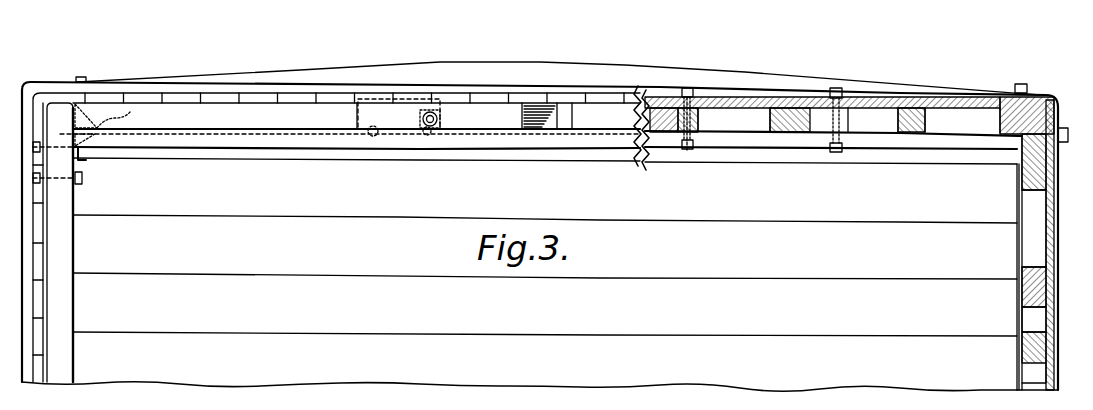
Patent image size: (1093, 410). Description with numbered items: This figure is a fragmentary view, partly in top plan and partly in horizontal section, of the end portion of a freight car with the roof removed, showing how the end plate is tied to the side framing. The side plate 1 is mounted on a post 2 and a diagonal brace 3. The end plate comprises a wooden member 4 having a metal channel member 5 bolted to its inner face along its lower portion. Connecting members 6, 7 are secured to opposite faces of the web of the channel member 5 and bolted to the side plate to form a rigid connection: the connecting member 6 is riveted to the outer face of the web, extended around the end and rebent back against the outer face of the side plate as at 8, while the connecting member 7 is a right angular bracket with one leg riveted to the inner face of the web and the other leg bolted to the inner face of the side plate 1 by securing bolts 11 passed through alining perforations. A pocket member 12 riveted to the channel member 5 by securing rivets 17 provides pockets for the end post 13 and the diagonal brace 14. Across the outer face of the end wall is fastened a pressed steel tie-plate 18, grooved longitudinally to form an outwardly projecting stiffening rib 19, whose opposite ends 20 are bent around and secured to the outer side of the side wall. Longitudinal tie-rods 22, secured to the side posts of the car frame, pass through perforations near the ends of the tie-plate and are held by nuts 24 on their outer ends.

The side plate 1 is at (73, 271).
The post 2 is at (1032, 128).
The diagonal brace 3 is at (1033, 320).
The wooden member 4 is at (215, 116).
The channel member 5 is at (457, 146).
The connecting member 6 is at (108, 121).
The connecting member 7 is at (85, 160).
The rebent portion 8 is at (47, 156).
The securing bolt 11 is at (83, 182).
The pocket member 12 is at (402, 104).
The end post 13 is at (672, 133).
The diagonal brace 14 is at (826, 122).
The securing rivet 17 is at (376, 142).
The tie-plate 18 is at (891, 93).
The stiffening rib 19 is at (500, 75).
The end of tie-plate 20 is at (1070, 127).
The tie-rod 22 is at (1020, 244).
The nut 24 is at (84, 82).